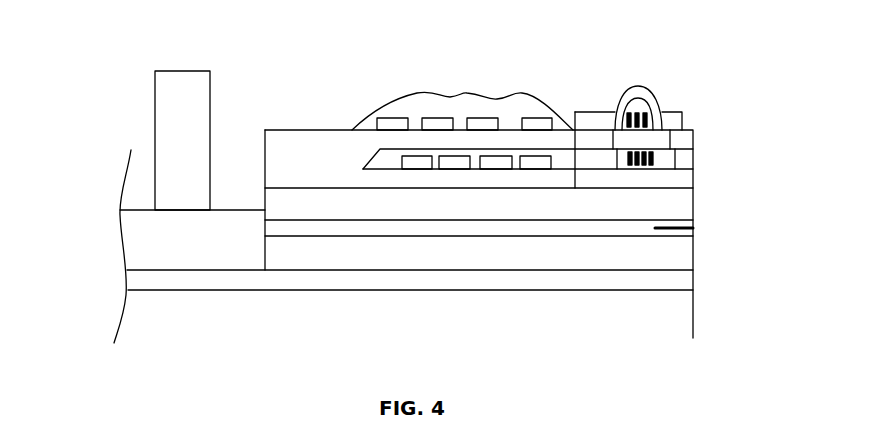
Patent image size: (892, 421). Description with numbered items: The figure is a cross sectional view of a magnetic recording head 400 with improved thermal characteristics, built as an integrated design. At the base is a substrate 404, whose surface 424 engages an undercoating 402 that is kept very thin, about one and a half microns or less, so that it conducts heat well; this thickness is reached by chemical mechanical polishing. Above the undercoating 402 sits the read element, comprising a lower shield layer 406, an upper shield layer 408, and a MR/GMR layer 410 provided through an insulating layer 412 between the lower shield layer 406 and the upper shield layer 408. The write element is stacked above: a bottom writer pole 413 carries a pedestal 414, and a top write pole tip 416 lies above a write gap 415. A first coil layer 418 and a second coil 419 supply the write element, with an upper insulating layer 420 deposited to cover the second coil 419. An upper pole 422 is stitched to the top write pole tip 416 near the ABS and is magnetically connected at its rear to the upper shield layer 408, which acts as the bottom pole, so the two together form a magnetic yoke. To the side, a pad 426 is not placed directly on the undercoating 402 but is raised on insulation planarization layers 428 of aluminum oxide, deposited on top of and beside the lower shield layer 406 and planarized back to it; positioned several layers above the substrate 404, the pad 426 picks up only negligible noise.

The magnetic recording head 400 is at (116, 96).
The undercoating 402 is at (693, 280).
The substrate 404 is at (693, 310).
The lower shield layer 406 is at (693, 248).
The upper shield layer 408 is at (693, 202).
The MR/GMR layer 410 is at (693, 228).
The insulating layer 412 is at (580, 228).
The bottom writer pole 413 is at (693, 180).
The pedestal 414 is at (693, 162).
The write gap 415 is at (693, 145).
The top write pole tip 416 is at (693, 133).
The first coil layer 418 is at (653, 158).
The second coil 419 is at (650, 110).
The upper insulating layer 420 is at (628, 107).
The upper pole 422 is at (685, 117).
The surface of the substrate 424 is at (462, 281).
The pad 426 is at (210, 96).
The planarization layers 428 is at (122, 257).